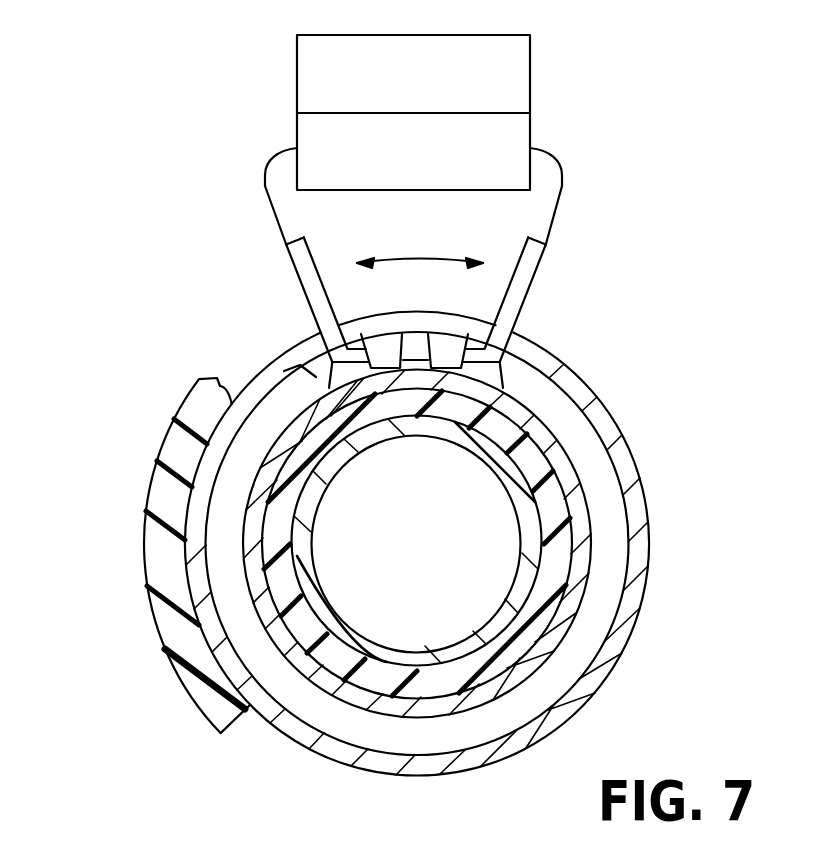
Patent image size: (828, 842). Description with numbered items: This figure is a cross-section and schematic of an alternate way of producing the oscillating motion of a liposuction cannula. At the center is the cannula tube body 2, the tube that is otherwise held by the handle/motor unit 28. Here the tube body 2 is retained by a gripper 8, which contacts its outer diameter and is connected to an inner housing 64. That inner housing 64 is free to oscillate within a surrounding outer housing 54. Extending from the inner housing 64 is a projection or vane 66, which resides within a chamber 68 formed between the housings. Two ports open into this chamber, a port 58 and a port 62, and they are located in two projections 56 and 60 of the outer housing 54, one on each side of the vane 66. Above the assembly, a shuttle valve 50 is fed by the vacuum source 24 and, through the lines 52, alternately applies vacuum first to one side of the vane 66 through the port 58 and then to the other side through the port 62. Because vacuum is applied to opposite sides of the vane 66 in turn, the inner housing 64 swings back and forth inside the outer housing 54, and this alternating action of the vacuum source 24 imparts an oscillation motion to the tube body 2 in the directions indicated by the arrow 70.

The cannula tube body 2 is at (513, 512).
The gripper 8 is at (560, 547).
The vacuum source 24 is at (531, 78).
The handle/motor unit 28 is at (148, 592).
The shuttle valve 50 is at (531, 127).
The vacuum line 52 is at (266, 182).
The outer housing 54 is at (620, 425).
The projection 56 is at (568, 372).
The port 58 is at (528, 340).
The projection 60 is at (284, 371).
The port 62 is at (303, 337).
The inner housing 64 is at (583, 483).
The vane 66 is at (417, 333).
The chamber 68 is at (387, 337).
The arrow 70 is at (418, 262).